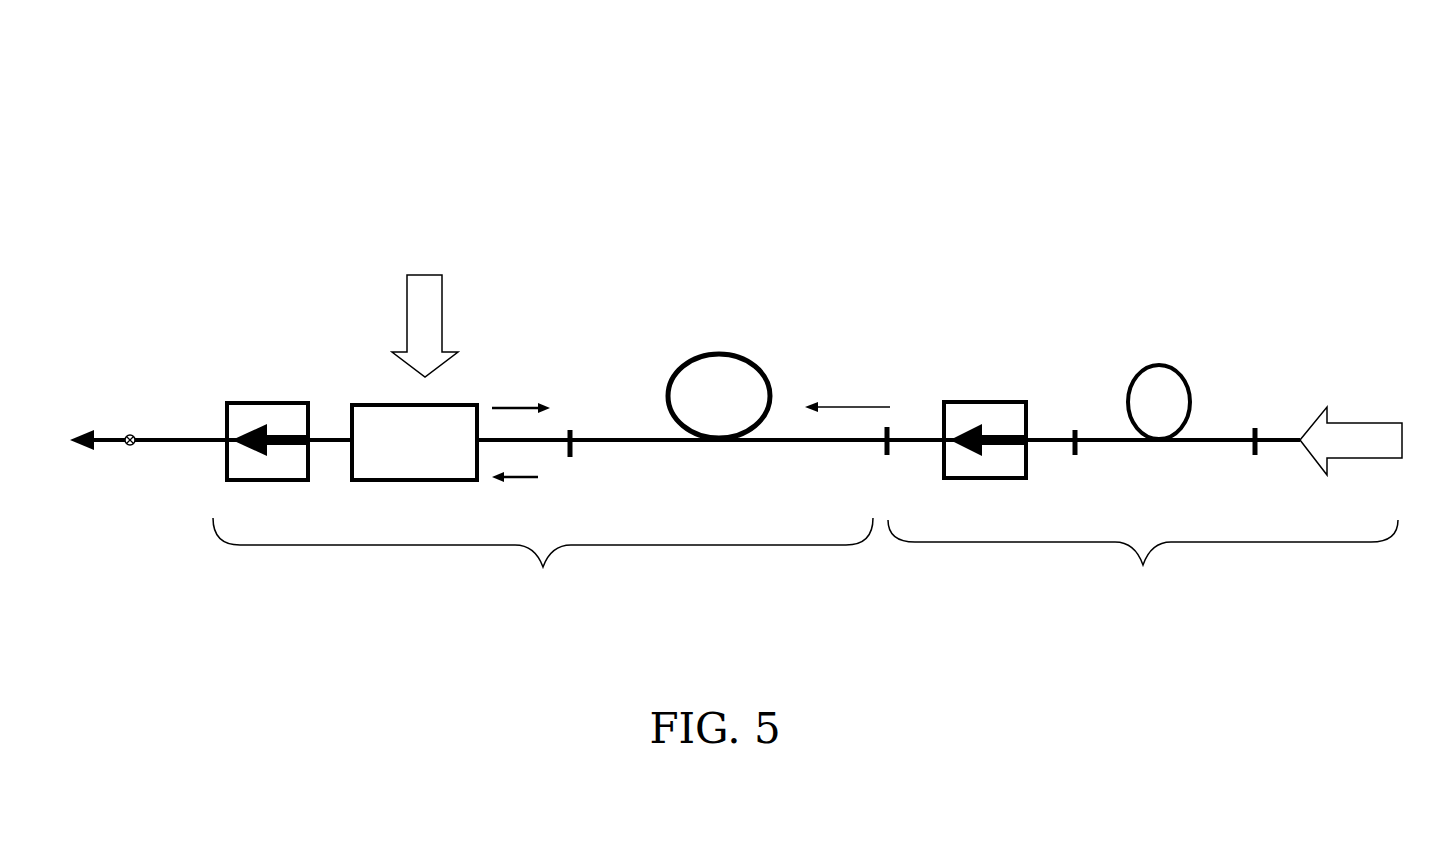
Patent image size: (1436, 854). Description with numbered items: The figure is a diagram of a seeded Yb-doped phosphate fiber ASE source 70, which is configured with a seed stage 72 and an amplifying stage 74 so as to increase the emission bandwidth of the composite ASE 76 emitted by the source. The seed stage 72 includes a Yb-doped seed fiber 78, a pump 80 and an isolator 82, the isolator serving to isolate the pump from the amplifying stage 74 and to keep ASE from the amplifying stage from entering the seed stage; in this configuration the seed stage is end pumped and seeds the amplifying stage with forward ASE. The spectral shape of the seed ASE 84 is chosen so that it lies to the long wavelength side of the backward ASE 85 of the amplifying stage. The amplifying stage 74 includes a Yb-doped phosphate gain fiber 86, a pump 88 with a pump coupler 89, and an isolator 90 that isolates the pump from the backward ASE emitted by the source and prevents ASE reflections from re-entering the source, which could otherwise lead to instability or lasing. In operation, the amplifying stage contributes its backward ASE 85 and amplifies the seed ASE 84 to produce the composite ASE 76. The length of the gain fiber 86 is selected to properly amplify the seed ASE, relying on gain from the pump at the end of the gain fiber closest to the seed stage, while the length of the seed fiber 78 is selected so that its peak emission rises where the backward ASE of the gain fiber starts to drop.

The fiber ASE source 70 is at (893, 169).
The seed stage 72 is at (1143, 571).
The amplifying stage 74 is at (543, 570).
The composite ASE 76 is at (95, 432).
The Yb-doped seed fiber 78 is at (1178, 372).
The pump 80 is at (1333, 420).
The isolator 82 is at (975, 402).
The seed ASE 84 is at (842, 413).
The backward ASE 85 is at (512, 480).
The Yb-doped phosphate gain fiber 86 is at (690, 360).
The pump 88 is at (403, 317).
The pump coupler 89 is at (390, 405).
The isolator 90 is at (262, 403).